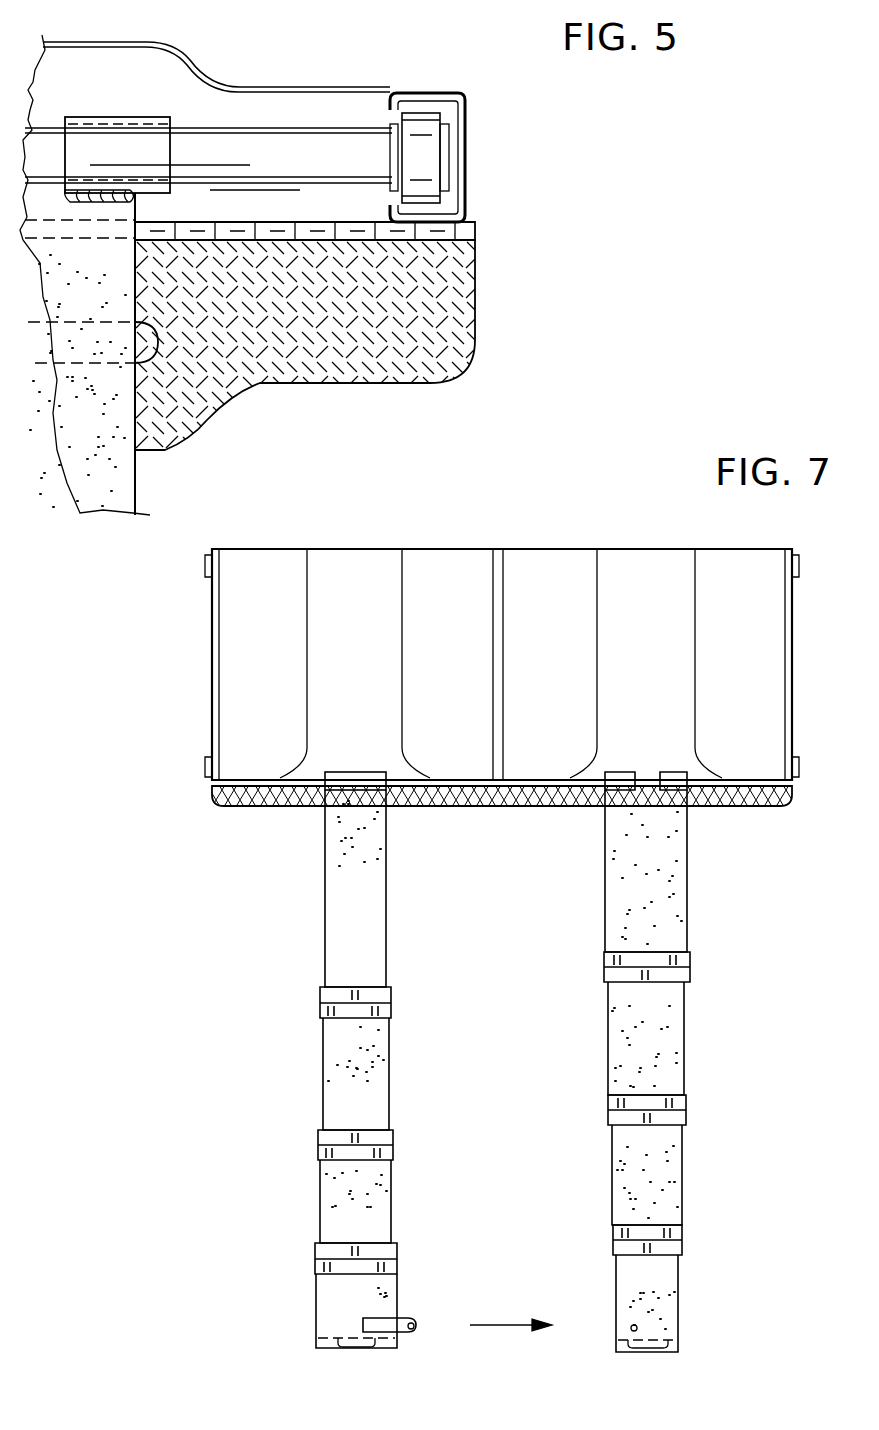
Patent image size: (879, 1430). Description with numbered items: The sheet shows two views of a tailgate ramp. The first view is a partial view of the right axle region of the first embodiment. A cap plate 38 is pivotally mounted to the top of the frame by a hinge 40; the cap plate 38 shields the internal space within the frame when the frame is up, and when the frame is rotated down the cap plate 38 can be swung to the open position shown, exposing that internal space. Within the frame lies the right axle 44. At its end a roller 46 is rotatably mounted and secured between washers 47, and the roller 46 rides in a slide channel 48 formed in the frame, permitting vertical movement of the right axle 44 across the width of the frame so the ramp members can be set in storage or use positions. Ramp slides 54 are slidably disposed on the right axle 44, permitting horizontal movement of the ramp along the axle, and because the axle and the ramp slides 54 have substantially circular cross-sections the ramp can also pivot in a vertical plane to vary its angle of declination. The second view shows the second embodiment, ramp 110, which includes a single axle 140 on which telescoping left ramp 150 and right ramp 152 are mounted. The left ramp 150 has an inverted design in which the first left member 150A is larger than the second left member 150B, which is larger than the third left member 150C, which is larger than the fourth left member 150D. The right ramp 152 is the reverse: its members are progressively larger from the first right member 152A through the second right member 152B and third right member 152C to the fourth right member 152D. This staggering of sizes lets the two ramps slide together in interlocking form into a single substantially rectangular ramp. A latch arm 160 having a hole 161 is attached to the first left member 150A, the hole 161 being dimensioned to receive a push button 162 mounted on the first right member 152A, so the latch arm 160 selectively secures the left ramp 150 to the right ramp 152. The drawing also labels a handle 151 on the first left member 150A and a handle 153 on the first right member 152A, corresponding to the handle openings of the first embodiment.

In FIG. 5, the cap plate 38 is at (438, 355).
In FIG. 5, the hinge 40 is at (465, 230).
In FIG. 5, the right axle 44 is at (290, 152).
In FIG. 5, the rollers 46 is at (420, 118).
In FIG. 5, the washers 47 is at (392, 147).
In FIG. 5, the slide channels 48 is at (458, 115).
In FIG. 5, the ramp slides 54 is at (126, 128).
In FIG. 7, the ramp 110 is at (500, 521).
In FIG. 7, the axle 140 is at (487, 800).
In FIG. 7, the left ramp 150 is at (415, 1060).
In FIG. 7, the first left member 150A is at (356, 1311).
In FIG. 7, the second left member 150B is at (355, 1201).
In FIG. 7, the third left member 150C is at (356, 1074).
In FIG. 7, the fourth left member 150D is at (355, 888).
In FIG. 7, the foot 151 is at (352, 1347).
In FIG. 7, the right ramp 152 is at (585, 1062).
In FIG. 7, the first right member 152A is at (647, 1303).
In FIG. 7, the second right member 152B is at (647, 1175).
In FIG. 7, the third right member 152C is at (646, 1038).
In FIG. 7, the fourth right member 152D is at (646, 871).
In FIG. 7, the foot 153 is at (654, 1350).
In FIG. 7, the latch arm 160 is at (398, 1318).
In FIG. 7, the hole 161 is at (414, 1330).
In FIG. 7, the push button 162 is at (630, 1327).